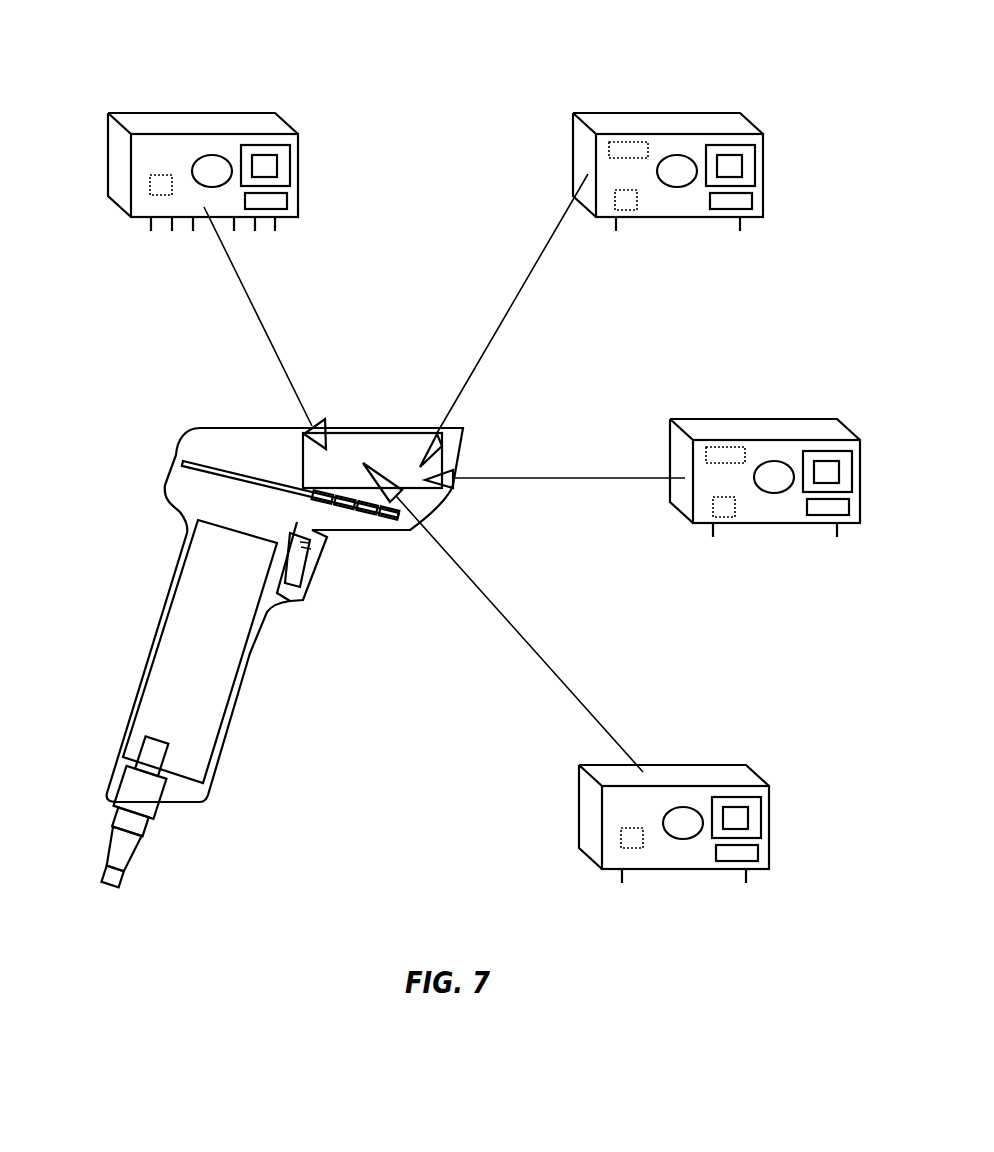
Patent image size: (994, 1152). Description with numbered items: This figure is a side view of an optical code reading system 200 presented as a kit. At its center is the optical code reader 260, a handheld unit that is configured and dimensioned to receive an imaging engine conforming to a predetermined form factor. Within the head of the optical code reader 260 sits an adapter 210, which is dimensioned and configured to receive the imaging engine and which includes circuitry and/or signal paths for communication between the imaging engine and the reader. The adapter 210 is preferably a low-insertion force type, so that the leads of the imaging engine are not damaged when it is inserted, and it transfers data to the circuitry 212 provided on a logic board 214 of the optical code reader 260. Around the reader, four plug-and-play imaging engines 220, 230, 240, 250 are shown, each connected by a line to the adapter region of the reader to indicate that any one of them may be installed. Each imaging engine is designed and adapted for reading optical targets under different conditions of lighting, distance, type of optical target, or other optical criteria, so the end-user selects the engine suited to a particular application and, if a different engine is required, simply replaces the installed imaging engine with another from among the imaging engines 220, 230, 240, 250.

The optical code reading system 200 is at (255, 582).
The adapter 210 is at (408, 418).
The circuitry 212 is at (352, 507).
The logic board 214 is at (214, 484).
The plug-and-play imaging engine 220 is at (214, 125).
The plug-and-play imaging engine 230 is at (682, 123).
The plug-and-play imaging engine 240 is at (770, 427).
The plug-and-play imaging engine 250 is at (705, 773).
The optical code reader 260 is at (337, 412).